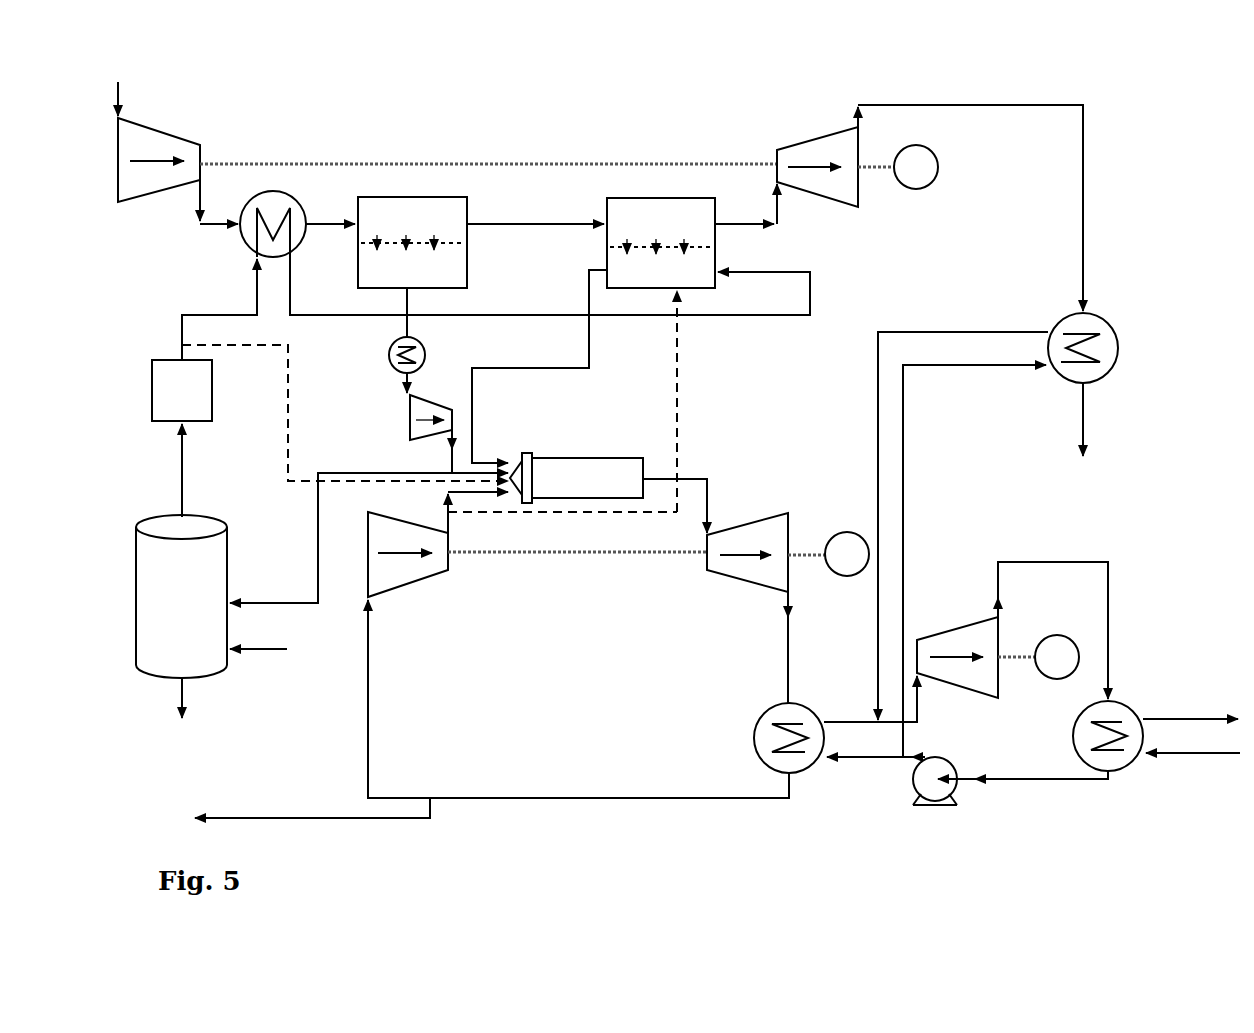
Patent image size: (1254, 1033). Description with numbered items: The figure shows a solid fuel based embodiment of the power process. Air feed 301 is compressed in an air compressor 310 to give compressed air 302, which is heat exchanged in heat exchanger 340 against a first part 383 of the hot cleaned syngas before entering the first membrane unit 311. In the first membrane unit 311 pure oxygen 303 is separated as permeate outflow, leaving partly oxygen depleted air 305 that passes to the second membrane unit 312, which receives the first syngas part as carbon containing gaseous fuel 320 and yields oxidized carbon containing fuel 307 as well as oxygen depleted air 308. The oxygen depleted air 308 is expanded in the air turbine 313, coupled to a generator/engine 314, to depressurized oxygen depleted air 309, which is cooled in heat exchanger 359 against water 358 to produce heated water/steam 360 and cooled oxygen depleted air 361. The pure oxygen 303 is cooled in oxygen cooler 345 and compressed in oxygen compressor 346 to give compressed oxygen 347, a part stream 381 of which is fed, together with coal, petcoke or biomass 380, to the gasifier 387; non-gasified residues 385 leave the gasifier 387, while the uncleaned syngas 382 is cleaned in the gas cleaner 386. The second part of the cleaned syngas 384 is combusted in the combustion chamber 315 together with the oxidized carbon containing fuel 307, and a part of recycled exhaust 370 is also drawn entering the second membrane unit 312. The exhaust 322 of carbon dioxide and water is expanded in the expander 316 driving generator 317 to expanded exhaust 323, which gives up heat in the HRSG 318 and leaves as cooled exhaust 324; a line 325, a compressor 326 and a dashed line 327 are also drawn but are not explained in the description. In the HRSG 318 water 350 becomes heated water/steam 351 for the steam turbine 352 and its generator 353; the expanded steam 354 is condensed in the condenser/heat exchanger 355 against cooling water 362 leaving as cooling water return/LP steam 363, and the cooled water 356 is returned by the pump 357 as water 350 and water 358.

The air feed 301 is at (132, 98).
The compressed air 302 is at (176, 224).
The pure oxygen (permeate outflow) 303 is at (461, 312).
The partly oxygen depleted air 305 is at (535, 214).
The oxidized carbon containing fuel 307 is at (539, 366).
The oxygen depleted air 308 is at (771, 211).
The depressurized oxygen depleted air 309 is at (1000, 208).
The air compressor 310 is at (159, 160).
The first membrane unit 311 is at (412, 242).
The second membrane unit 312 is at (661, 243).
The air turbine 313 is at (835, 167).
The generator/engine 314 is at (946, 167).
The combustion chamber 315 is at (576, 478).
The expander 316 is at (766, 552).
The generator 317 is at (847, 539).
The HRSG, heat exchanger 318 is at (749, 742).
The carbon containing gaseous fuel 320 is at (574, 286).
The exhaust 322 is at (660, 472).
The expanded exhaust 323 is at (827, 647).
The cooled exhaust 324 is at (312, 803).
The recycle stream to compressor 325 is at (578, 699).
The recycle compressor 326 is at (537, 544).
The control line 327 is at (562, 526).
The heat exchanger 340 is at (297, 211).
The oxygen cooler 345 is at (434, 364).
The oxygen compressor 346 is at (407, 417).
The compressed oxygen 347 is at (430, 453).
The water 350 is at (876, 771).
The heated water/steam 351 is at (868, 703).
The steam turbine 352 is at (976, 657).
The generator 353 is at (1057, 644).
The expanded steam 354 is at (1053, 619).
The condenser/heat exchanger 355 is at (1066, 736).
The cooled water 356 is at (1032, 788).
The pump 357 is at (937, 799).
The water 358 is at (974, 561).
The heat exchanger 359 is at (1118, 348).
The heated water/steam 360 is at (942, 526).
The cooled oxygen depleted air 361 is at (1110, 419).
The cooling water 362 is at (1193, 768).
The cooling water return/LP steam 363 is at (1190, 710).
The part of recycled exhaust 370 is at (711, 401).
The coal, petcoke or biomass 380 is at (278, 634).
The pure oxygen 381 is at (369, 538).
The uncleaned syngas 382 is at (226, 470).
The first part of cleaned syngas 383 is at (209, 309).
The second part of cleaned syngas 384 is at (345, 413).
The non-gasified residues 385 is at (178, 714).
The gas cleaner 386 is at (182, 390).
The gasifier 387 is at (181, 596).